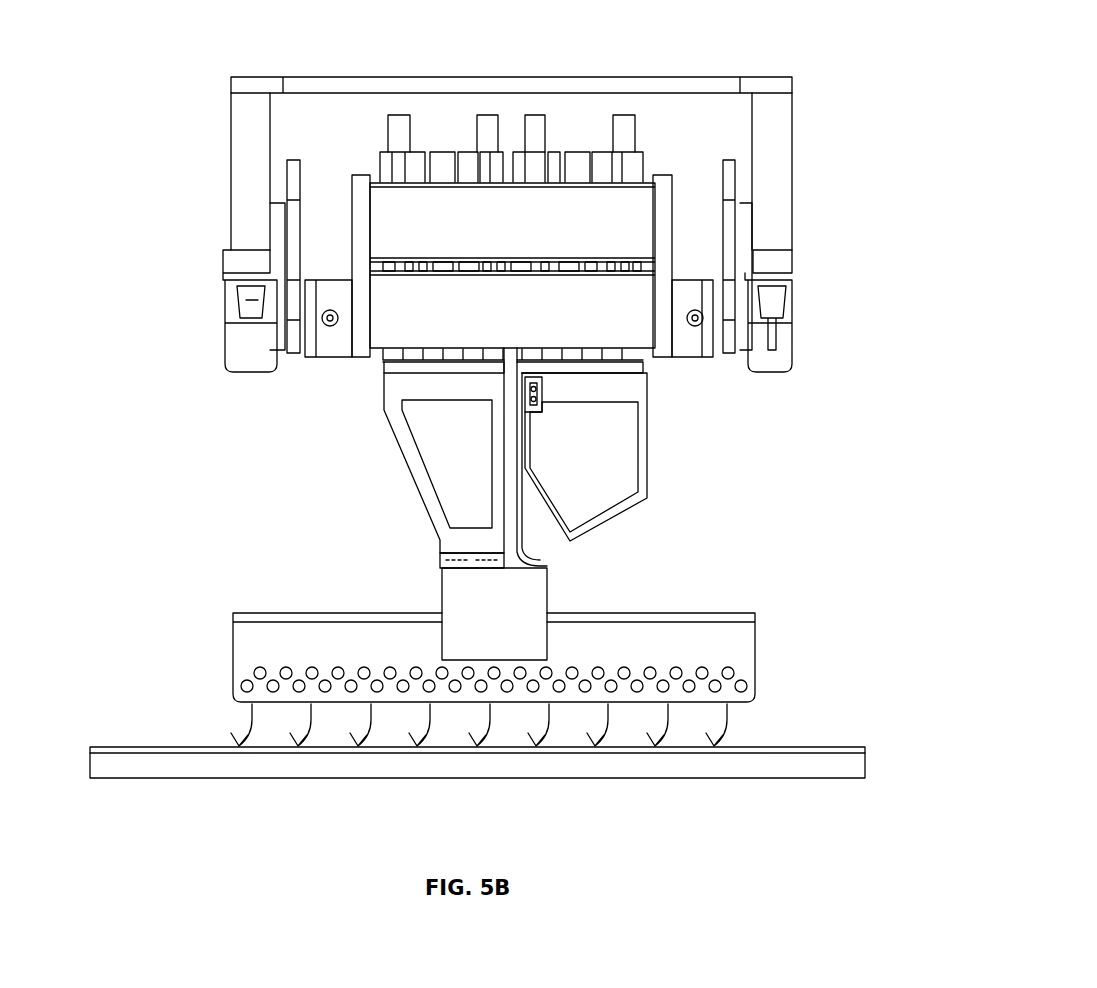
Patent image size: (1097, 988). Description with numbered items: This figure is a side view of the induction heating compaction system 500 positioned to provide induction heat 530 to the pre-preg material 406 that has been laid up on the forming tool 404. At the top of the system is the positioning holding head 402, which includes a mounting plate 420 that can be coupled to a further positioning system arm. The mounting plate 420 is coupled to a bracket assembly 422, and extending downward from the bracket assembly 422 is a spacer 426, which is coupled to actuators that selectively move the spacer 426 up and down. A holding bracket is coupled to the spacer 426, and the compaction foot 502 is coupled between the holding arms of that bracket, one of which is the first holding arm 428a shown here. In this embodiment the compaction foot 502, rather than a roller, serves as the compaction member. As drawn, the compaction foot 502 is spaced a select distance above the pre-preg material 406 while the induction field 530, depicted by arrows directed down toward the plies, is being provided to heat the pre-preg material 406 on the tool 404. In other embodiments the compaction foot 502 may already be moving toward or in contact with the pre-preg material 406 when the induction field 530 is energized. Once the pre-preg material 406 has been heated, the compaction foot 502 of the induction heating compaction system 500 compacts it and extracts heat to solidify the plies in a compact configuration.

The induction heating compaction system 500 is at (902, 98).
The mounting plate 420 is at (725, 78).
The bracket assembly 422 is at (245, 180).
The positioning holding head 402 is at (793, 210).
The spacer 426 is at (405, 460).
The first holding arm 428a is at (525, 600).
The compaction foot 502 is at (758, 630).
The induction heat 530 is at (672, 718).
The pre-preg material 406 is at (850, 747).
The forming tool 404 is at (833, 768).